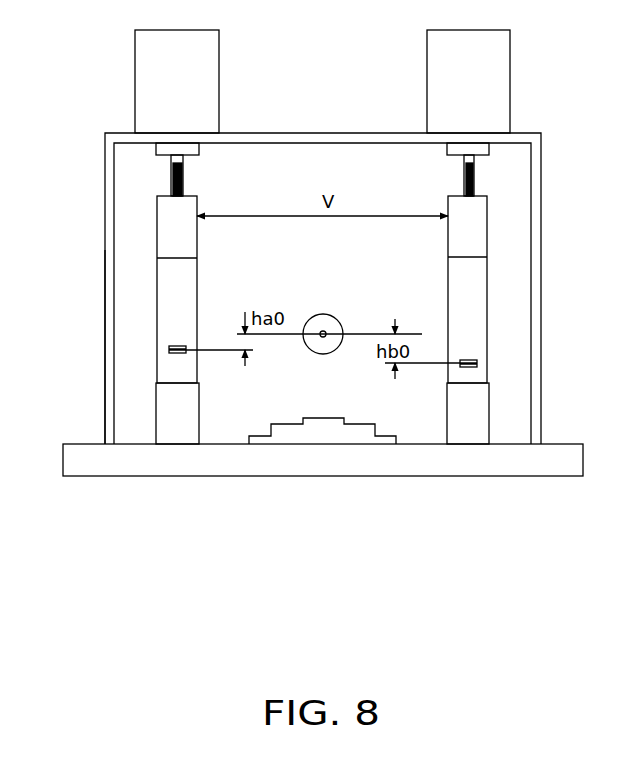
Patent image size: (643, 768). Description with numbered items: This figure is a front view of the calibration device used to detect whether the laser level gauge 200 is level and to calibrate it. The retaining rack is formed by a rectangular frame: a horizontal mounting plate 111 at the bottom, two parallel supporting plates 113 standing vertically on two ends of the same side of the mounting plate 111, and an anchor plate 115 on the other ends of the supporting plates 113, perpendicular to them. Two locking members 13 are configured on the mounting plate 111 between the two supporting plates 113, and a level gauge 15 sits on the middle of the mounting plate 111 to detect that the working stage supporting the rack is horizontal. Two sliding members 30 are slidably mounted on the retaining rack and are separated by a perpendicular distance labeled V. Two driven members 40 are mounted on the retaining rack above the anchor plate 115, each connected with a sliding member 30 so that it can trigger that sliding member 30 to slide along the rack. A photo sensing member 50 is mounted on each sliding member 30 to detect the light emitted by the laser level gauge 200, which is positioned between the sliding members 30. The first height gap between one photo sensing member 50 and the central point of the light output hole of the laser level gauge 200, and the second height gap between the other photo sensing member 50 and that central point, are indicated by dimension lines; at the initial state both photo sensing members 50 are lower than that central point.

The driven member 40 is at (155, 71).
The anchor plate 115 is at (277, 133).
The supporting plate 113 is at (105, 250).
The mounting plate 111 is at (194, 463).
The sliding member 30 is at (170, 214).
The locking member 13 is at (178, 402).
The photo sensing member 50 is at (169, 352).
The level gauge 15 is at (323, 432).
The laser level gauge 200 is at (323, 354).